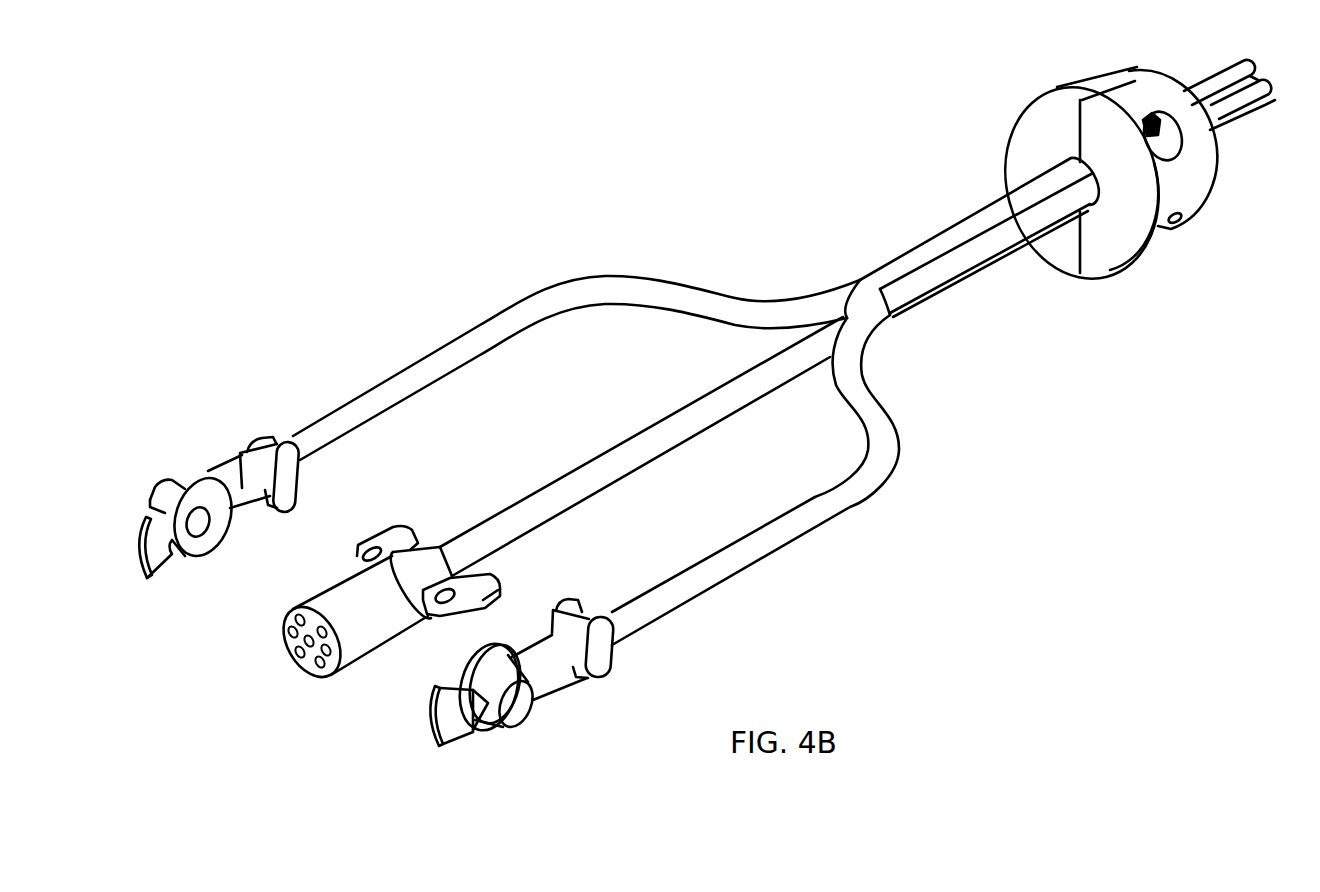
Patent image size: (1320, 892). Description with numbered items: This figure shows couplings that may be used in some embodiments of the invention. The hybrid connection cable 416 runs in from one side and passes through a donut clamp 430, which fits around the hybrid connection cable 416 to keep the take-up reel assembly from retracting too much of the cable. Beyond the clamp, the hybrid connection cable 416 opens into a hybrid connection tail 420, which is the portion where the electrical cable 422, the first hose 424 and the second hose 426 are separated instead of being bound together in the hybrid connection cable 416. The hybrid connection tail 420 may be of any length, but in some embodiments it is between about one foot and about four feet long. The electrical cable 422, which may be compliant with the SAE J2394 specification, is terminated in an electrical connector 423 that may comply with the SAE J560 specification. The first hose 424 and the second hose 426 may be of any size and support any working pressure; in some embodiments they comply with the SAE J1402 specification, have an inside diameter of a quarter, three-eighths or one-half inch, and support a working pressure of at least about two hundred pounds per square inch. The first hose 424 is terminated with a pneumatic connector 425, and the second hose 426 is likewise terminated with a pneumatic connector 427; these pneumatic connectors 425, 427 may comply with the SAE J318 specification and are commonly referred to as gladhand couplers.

The hybrid connection tail 420 is at (438, 280).
The hybrid connection cable 416 is at (957, 232).
The donut clamp 430 is at (1187, 193).
The first hose 424 is at (617, 290).
The electrical cable 422 is at (756, 383).
The second hose 426 is at (798, 518).
The pneumatic connector 425 is at (232, 480).
The electrical connector 423 is at (367, 633).
The pneumatic connector 427 is at (555, 667).